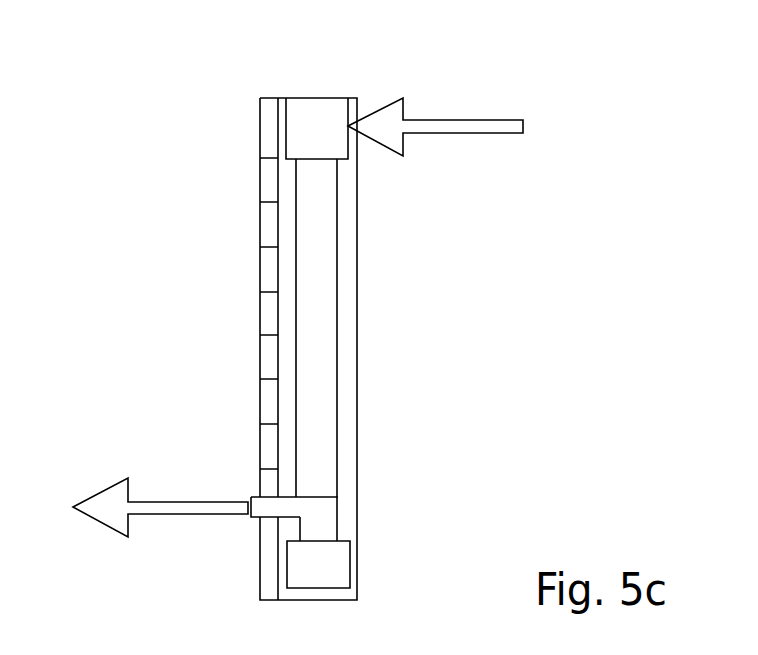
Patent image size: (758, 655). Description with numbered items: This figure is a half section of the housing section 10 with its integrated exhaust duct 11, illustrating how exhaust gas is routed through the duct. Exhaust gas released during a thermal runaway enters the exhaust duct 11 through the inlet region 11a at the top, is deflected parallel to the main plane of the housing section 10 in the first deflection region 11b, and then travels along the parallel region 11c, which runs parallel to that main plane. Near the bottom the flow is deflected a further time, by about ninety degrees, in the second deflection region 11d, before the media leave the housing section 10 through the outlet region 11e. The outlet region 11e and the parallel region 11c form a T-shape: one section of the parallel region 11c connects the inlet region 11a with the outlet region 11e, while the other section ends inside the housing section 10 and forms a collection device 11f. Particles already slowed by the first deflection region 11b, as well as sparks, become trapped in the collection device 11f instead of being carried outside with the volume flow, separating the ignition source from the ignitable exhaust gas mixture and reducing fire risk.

The housing section 10 is at (345, 367).
The exhaust duct 11 is at (258, 265).
The inlet region 11a is at (338, 132).
The first deflection region 11b is at (304, 130).
The parallel region 11c is at (322, 256).
The second deflection region 11d is at (325, 509).
The outlet region 11e is at (268, 507).
The collection device 11f is at (330, 567).